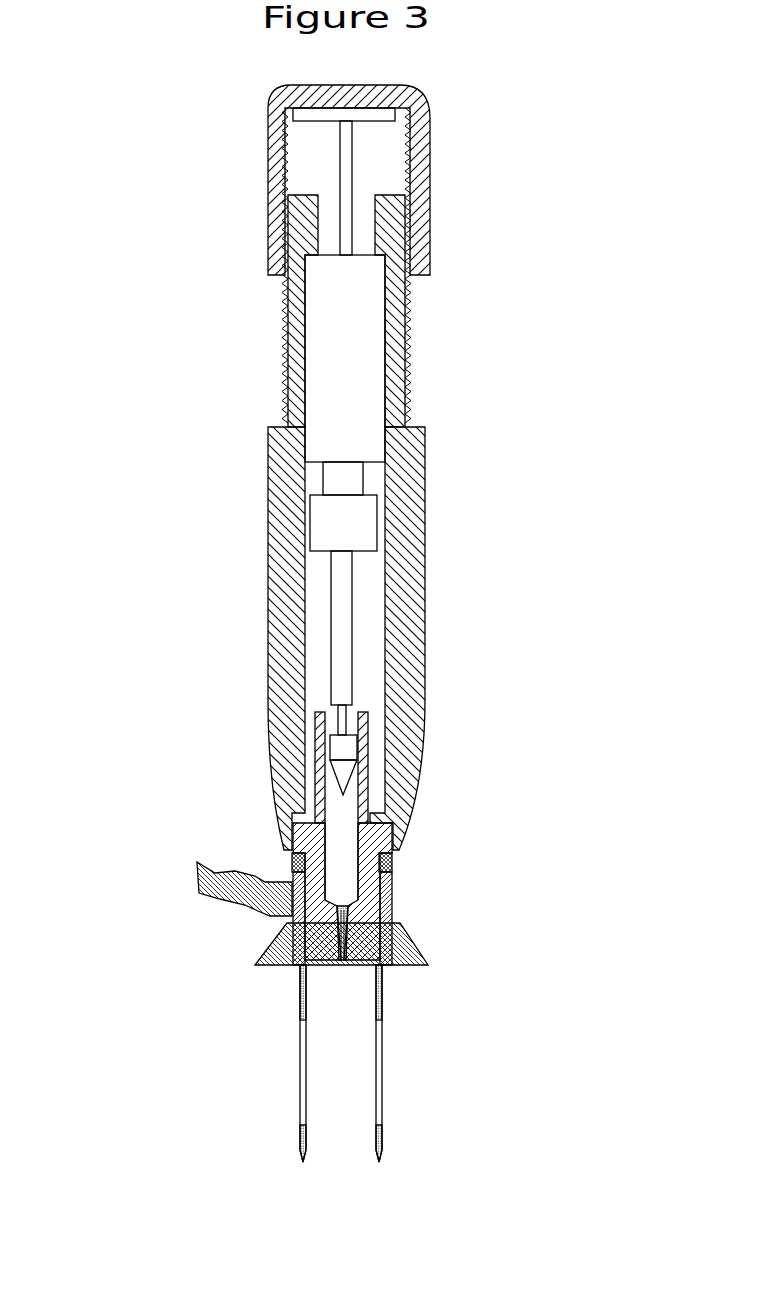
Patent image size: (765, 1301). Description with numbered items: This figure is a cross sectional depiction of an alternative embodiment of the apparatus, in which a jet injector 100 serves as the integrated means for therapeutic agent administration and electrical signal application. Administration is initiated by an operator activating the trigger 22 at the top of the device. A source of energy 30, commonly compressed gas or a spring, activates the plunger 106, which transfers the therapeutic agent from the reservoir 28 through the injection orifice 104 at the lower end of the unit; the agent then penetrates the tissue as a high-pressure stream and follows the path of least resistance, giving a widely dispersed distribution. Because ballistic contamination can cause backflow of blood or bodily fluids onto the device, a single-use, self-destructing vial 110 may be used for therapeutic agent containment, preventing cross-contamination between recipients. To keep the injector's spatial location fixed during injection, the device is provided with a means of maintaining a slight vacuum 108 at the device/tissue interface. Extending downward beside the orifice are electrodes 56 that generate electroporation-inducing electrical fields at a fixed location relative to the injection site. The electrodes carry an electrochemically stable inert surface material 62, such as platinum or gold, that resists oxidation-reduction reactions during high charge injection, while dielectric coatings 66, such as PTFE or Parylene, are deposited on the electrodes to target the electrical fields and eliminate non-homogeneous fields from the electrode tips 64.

The jet injector 100 is at (190, 388).
The trigger 22 is at (312, 114).
The source of energy 30 is at (345, 345).
The plunger 106 is at (340, 577).
The reservoir 28 is at (338, 810).
The single-use, self-destructing vial 110 is at (378, 838).
The means of maintaining a slight vacuum 108 is at (205, 882).
The orifice 104 is at (342, 968).
The electrodes 56 is at (326, 1098).
The inert surface material 62 is at (297, 1078).
The electrode tips 64 is at (303, 1165).
The dielectric coatings 66 is at (383, 1137).